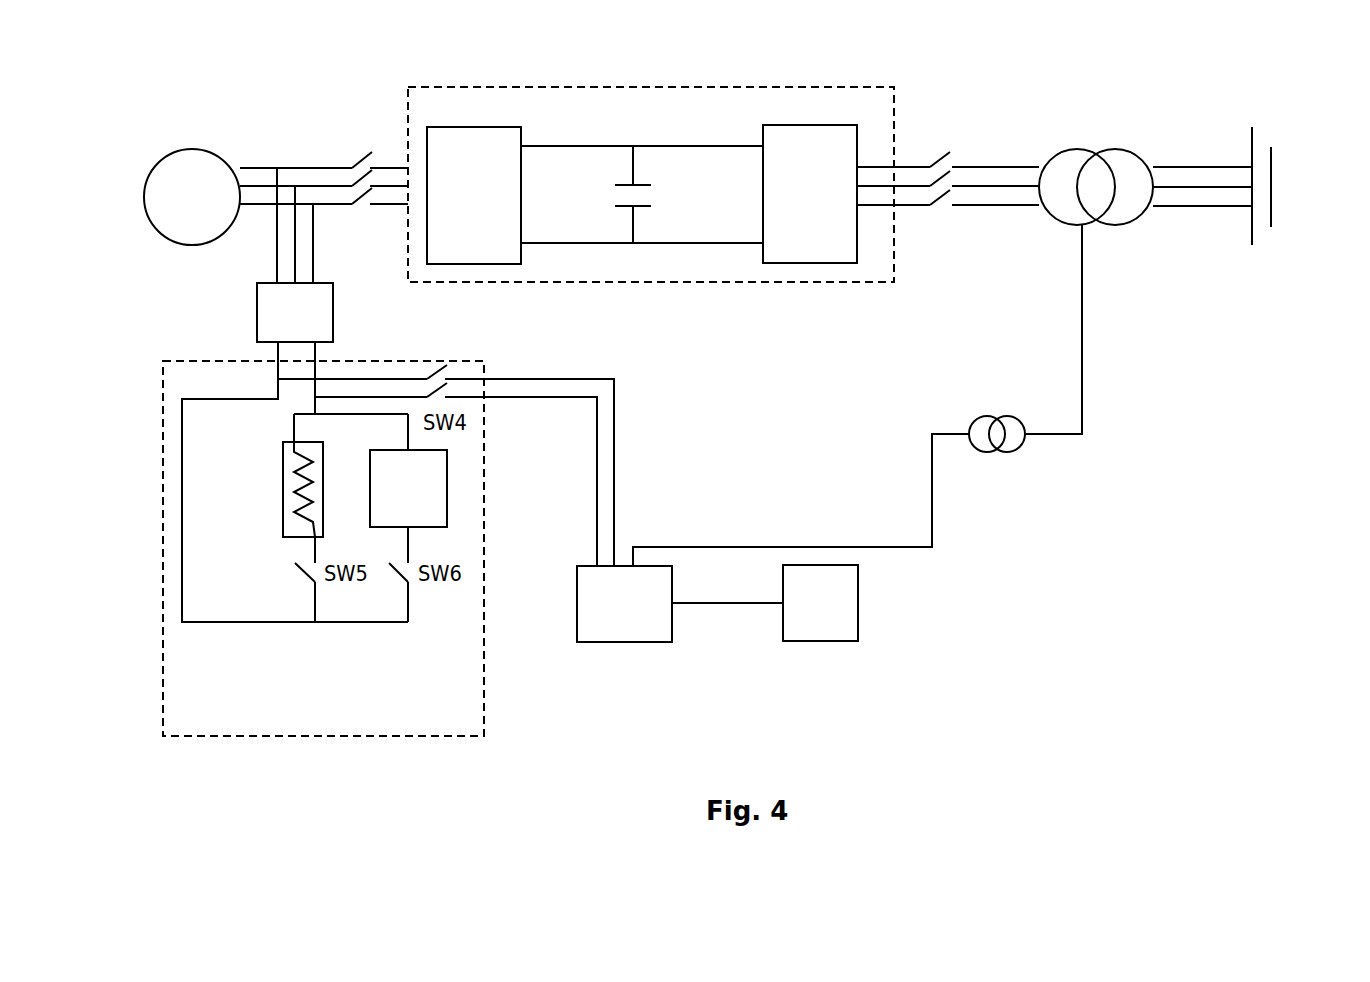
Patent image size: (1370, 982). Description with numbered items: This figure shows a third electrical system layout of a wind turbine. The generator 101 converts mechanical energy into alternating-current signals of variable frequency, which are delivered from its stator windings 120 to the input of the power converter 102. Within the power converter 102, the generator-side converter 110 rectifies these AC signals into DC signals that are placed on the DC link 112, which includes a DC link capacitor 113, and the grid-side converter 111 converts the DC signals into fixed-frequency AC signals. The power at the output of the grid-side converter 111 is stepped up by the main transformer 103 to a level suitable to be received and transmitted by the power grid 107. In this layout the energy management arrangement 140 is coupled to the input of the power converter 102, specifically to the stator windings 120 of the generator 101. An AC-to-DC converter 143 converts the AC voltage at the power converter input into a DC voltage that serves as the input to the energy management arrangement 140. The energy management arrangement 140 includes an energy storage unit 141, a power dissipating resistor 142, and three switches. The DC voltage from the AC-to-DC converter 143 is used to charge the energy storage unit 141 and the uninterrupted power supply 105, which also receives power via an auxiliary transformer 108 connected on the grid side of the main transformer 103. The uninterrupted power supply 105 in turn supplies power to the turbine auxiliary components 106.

The generator 101 is at (199, 148).
The stator windings 120 is at (277, 168).
The power converter 102 is at (895, 125).
The generator-side converter 110 is at (474, 195).
The grid-side converter 111 is at (810, 194).
The DC link 112 is at (557, 145).
The DC link capacitor 113 is at (632, 225).
The main transformer 103 is at (1120, 147).
The power grid 107 is at (1273, 167).
The auxiliary transformer 108 is at (1003, 416).
The AC-to-DC converter 143 is at (295, 255).
The energy management arrangement 140 is at (162, 452).
The energy storage unit 141 is at (408, 488).
The power dissipating resistor 142 is at (283, 505).
The uninterrupted power supply (UPS) 105 is at (657, 643).
The turbine auxiliary components 106 is at (765, 603).